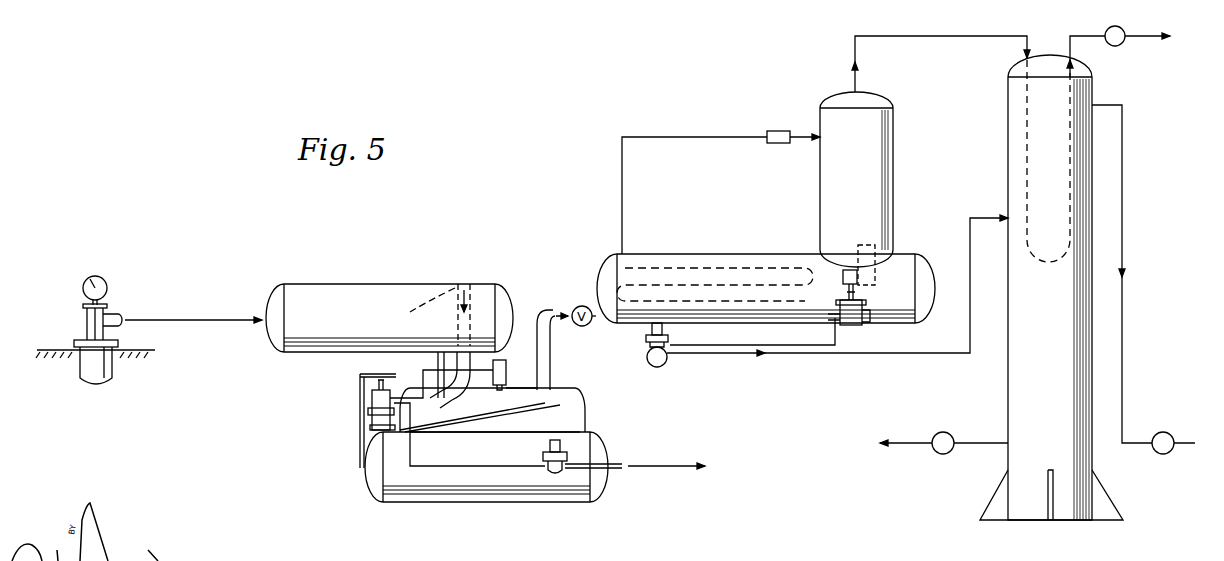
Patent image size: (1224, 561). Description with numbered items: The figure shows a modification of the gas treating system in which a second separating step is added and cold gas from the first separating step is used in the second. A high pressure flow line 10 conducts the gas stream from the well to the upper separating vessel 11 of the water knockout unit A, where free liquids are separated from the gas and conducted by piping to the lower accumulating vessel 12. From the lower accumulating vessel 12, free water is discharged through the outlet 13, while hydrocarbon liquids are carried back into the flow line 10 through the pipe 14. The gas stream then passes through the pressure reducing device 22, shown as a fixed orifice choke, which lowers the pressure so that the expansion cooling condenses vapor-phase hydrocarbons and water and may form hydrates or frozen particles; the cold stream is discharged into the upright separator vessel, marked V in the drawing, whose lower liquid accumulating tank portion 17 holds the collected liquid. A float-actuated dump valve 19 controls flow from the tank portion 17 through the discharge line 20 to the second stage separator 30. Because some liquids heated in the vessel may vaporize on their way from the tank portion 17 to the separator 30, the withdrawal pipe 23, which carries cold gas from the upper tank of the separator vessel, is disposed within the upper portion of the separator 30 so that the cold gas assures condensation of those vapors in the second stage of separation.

The high pressure flow line 10 is at (232, 318).
The upper separating vessel 11 is at (329, 286).
The water knockout unit A is at (411, 285).
The lower accumulating vessel 12 is at (432, 503).
The outlet 13 is at (620, 470).
The pipe 14 is at (585, 407).
The lower liquid accumulating tank portion 17 is at (872, 318).
The liquid discharge or dump valve 19 is at (672, 339).
The discharge line 20 is at (803, 353).
The pressure reducing device 22 is at (765, 133).
The withdrawal pipe 23 is at (936, 36).
The second stage separator 30 is at (1008, 407).
The vertical vessel V is at (893, 148).